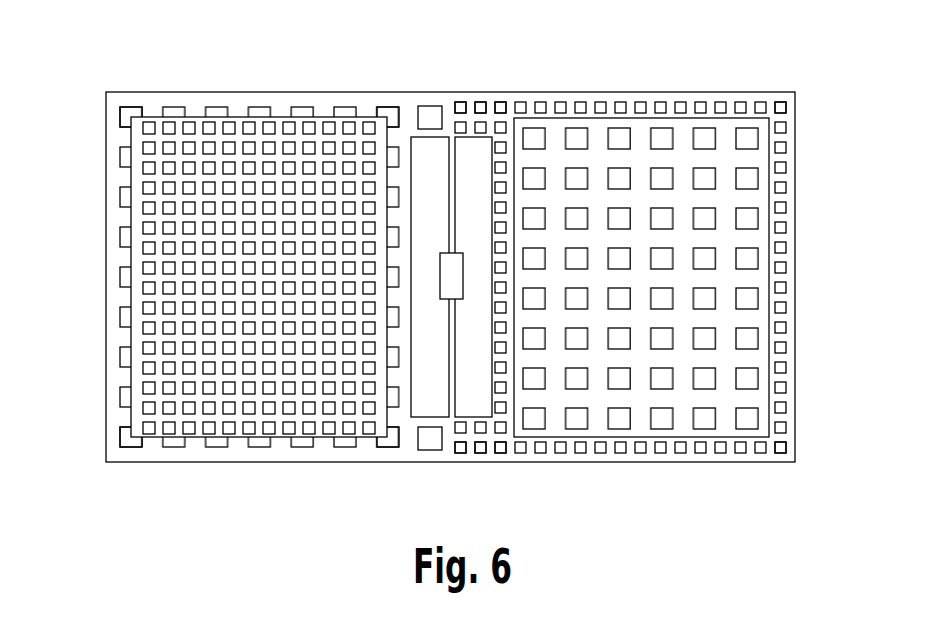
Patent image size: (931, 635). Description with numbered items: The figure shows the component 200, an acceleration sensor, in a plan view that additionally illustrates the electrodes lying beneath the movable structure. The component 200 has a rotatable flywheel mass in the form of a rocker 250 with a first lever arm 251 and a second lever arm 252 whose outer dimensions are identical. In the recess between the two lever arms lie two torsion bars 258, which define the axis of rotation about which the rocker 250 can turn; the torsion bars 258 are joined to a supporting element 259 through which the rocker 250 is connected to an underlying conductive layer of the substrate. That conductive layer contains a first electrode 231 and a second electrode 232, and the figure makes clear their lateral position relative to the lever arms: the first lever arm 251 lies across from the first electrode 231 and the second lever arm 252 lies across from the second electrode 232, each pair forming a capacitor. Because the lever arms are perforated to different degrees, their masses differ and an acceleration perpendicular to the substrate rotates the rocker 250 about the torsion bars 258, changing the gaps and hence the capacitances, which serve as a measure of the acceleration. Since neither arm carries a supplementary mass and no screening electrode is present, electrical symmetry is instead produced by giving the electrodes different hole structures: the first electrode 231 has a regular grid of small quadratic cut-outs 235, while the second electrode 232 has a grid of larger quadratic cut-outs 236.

The component 200 is at (430, 270).
The rocker 250 is at (425, 452).
The first lever arm 251 is at (235, 108).
The first electrode 231 is at (158, 427).
The cut-outs 235 is at (328, 127).
The torsion bars 258 is at (449, 158).
The supporting element 259 is at (443, 256).
The second lever arm 252 is at (649, 107).
The second electrode 232 is at (685, 415).
The cut-outs 236 is at (751, 136).